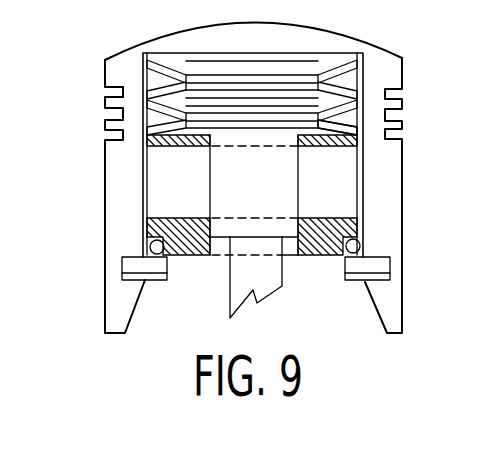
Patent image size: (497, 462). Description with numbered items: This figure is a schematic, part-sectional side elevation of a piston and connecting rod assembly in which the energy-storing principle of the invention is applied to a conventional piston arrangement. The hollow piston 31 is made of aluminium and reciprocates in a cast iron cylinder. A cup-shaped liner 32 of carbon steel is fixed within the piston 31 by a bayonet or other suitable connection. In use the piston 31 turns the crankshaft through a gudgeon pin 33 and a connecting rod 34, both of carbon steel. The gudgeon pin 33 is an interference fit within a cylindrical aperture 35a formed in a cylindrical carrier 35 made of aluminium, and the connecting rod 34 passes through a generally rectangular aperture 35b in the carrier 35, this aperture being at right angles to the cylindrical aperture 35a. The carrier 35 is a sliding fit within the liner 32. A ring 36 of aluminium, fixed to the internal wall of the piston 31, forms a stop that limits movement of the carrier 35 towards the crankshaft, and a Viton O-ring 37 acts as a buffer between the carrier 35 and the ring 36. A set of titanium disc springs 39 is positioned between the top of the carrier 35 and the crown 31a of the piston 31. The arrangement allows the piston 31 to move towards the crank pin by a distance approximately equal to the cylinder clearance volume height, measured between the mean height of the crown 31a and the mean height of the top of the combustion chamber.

The hollow piston 31 is at (133, 178).
The crown 31a is at (264, 49).
The cup-shaped liner 32 is at (363, 83).
The gudgeon pin 33 is at (341, 192).
The connecting rod 34 is at (269, 196).
The cylindrical carrier 35 is at (180, 230).
The cylindrical aperture 35a is at (347, 218).
The rectangular aperture 35b is at (222, 247).
The ring 36 is at (357, 273).
The O-ring 37 is at (359, 245).
The disc springs 39 is at (343, 128).